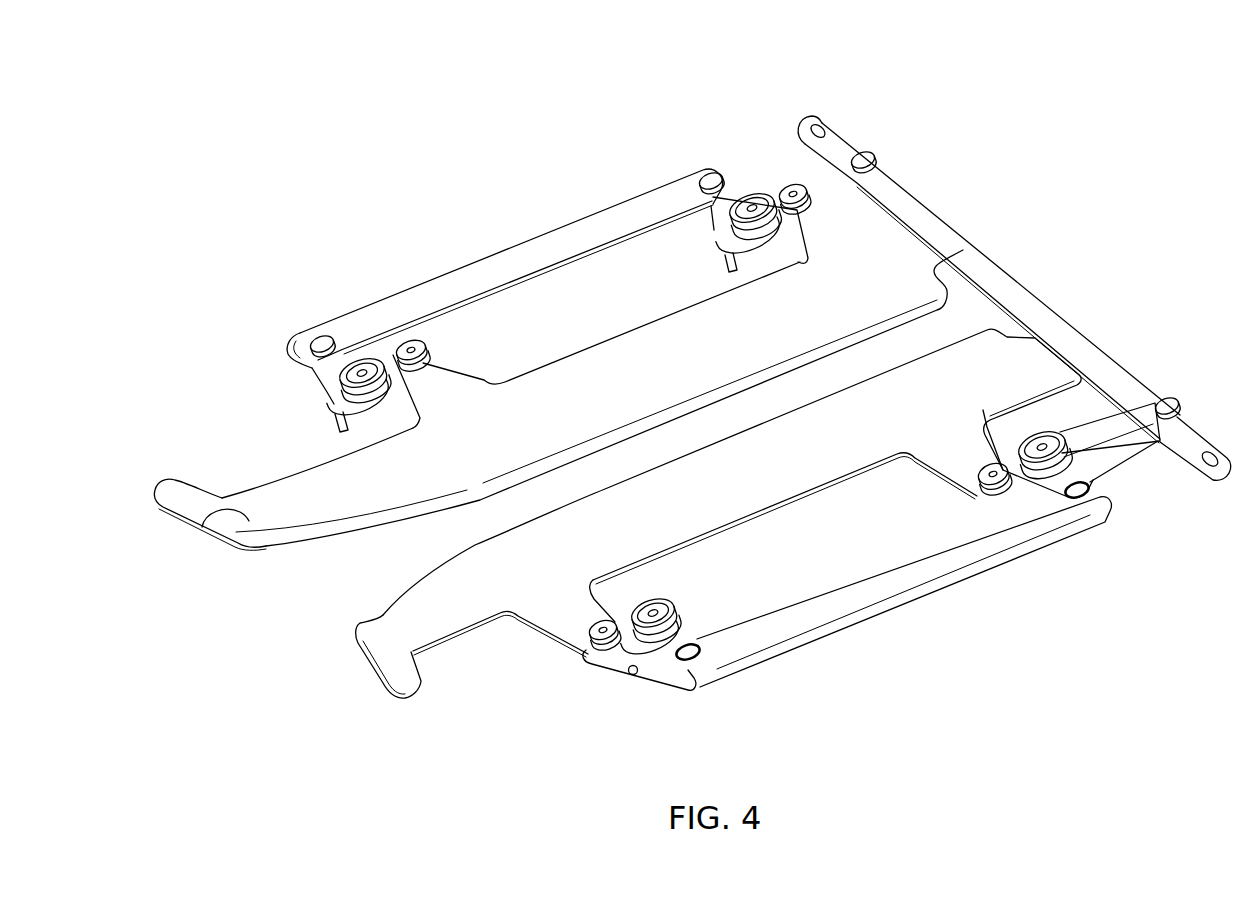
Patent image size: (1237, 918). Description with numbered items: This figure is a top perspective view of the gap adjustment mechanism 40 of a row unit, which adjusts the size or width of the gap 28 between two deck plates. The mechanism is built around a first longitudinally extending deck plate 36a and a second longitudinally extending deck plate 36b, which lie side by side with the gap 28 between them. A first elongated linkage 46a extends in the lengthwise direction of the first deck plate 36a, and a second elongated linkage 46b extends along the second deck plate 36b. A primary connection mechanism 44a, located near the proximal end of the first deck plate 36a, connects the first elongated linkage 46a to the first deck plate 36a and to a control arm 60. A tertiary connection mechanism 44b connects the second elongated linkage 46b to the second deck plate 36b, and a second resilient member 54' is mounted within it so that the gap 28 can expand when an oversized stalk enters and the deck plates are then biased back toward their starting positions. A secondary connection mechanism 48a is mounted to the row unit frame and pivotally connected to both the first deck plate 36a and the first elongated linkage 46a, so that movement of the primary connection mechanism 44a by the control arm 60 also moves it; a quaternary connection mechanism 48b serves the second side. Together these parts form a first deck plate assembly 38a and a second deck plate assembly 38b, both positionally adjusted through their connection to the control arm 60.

The gap 28 is at (278, 602).
The first longitudinally extending deck plate 36a is at (372, 618).
The second longitudinally extending deck plate 36b is at (215, 515).
The first deck plate assembly 38a is at (843, 663).
The second deck plate assembly 38b is at (303, 300).
The gap adjustment mechanism 40 is at (428, 160).
The primary connection mechanism 44a is at (1100, 484).
The tertiary connection mechanism 44b is at (750, 176).
The first elongated linkage 46a is at (910, 567).
The second elongated linkage 46b is at (595, 222).
The secondary connection mechanism 48a is at (653, 655).
The quaternary connection mechanism 48b is at (342, 388).
The second resilient member 54' is at (772, 138).
The control arm 60 is at (903, 197).